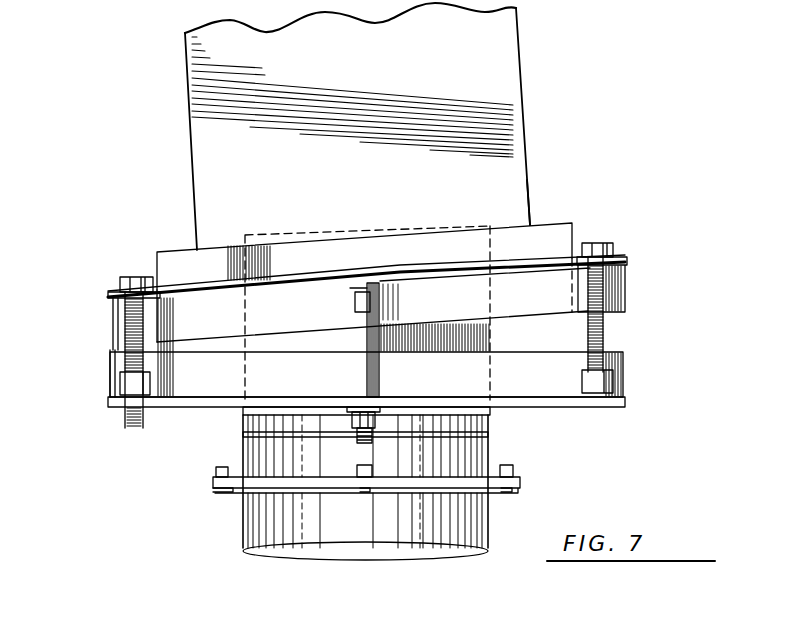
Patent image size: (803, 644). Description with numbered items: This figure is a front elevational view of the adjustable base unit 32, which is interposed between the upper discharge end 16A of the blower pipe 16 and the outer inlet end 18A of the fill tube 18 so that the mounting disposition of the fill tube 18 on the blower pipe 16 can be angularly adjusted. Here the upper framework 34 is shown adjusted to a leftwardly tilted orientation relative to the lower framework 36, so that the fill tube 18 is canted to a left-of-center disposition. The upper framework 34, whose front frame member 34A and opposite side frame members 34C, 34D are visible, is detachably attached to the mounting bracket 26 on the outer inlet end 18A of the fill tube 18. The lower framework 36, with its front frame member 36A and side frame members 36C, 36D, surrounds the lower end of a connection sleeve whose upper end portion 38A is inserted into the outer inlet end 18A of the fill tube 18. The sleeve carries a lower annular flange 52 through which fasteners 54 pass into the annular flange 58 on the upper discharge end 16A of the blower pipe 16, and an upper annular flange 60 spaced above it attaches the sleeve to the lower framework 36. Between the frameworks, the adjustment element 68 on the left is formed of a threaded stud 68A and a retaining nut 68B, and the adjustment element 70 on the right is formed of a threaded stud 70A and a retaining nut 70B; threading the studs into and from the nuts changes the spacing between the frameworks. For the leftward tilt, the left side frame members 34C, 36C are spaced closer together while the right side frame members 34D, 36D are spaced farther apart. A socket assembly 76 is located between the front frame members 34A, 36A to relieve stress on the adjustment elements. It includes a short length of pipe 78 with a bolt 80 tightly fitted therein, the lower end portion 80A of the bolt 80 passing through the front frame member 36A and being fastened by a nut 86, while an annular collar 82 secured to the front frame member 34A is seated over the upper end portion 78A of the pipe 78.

The blower pipe 16 is at (247, 543).
The upper discharge end 16A is at (255, 517).
The fill tube 18 is at (530, 30).
The outer inlet end 18A is at (532, 178).
The mounting bracket 26 is at (543, 233).
The adjustable base unit 32 is at (118, 248).
The upper framework 34 is at (468, 274).
The front frame member 34A is at (283, 305).
The left side frame member 34C is at (182, 250).
The right side frame member 34D is at (607, 280).
The lower framework 36 is at (547, 408).
The front frame member 36A is at (186, 383).
The left side frame member 36C is at (236, 247).
The right side frame member 36D is at (567, 377).
The upper end portion 38A is at (280, 236).
The lower annular flange 52 is at (273, 480).
The fasteners 54 is at (220, 490).
The annular flange 58 is at (412, 483).
The upper annular flange 60 is at (246, 412).
The adjustment element 68 is at (118, 315).
The threaded stud 68A is at (133, 337).
The retaining nut 68B is at (128, 382).
The adjustment element 70 is at (610, 323).
The threaded stud 70A is at (608, 333).
The retaining nut 70B is at (597, 378).
The socket assembly 76 is at (347, 347).
The pipe 78 is at (380, 323).
The upper end portion 78A is at (367, 293).
The bolt 80 is at (355, 413).
The lower end portion 80A is at (363, 444).
The annular collar 82 is at (355, 296).
The nut 86 is at (360, 421).